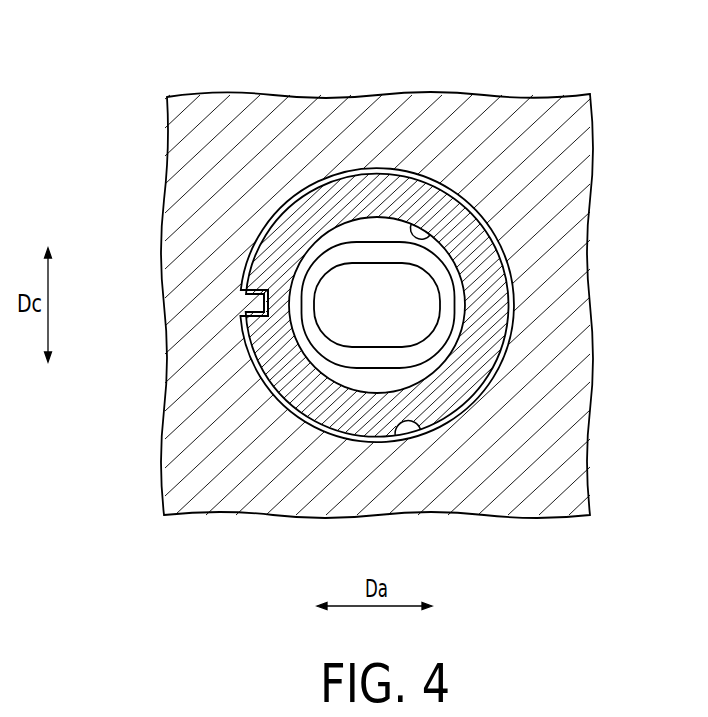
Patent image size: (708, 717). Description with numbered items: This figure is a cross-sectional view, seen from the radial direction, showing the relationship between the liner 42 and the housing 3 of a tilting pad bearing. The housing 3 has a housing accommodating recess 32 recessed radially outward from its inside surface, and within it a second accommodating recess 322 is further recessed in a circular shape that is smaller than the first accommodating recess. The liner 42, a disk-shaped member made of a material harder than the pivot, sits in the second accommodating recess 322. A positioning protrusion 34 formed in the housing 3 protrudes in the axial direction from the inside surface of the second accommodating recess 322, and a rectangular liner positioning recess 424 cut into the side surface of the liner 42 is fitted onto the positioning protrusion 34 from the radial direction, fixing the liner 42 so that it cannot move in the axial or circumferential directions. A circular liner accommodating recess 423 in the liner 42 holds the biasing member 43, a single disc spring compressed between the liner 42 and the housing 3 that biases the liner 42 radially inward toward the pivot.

The housing 3 is at (187, 413).
The housing accommodating recess 32 is at (377, 305).
The second accommodating recess 322 is at (410, 420).
The positioning protrusion 34 is at (243, 302).
The liner 42 is at (365, 175).
The liner accommodating recess 423 is at (435, 236).
The liner positioning recess 424 is at (243, 312).
The biasing member 43 is at (448, 290).